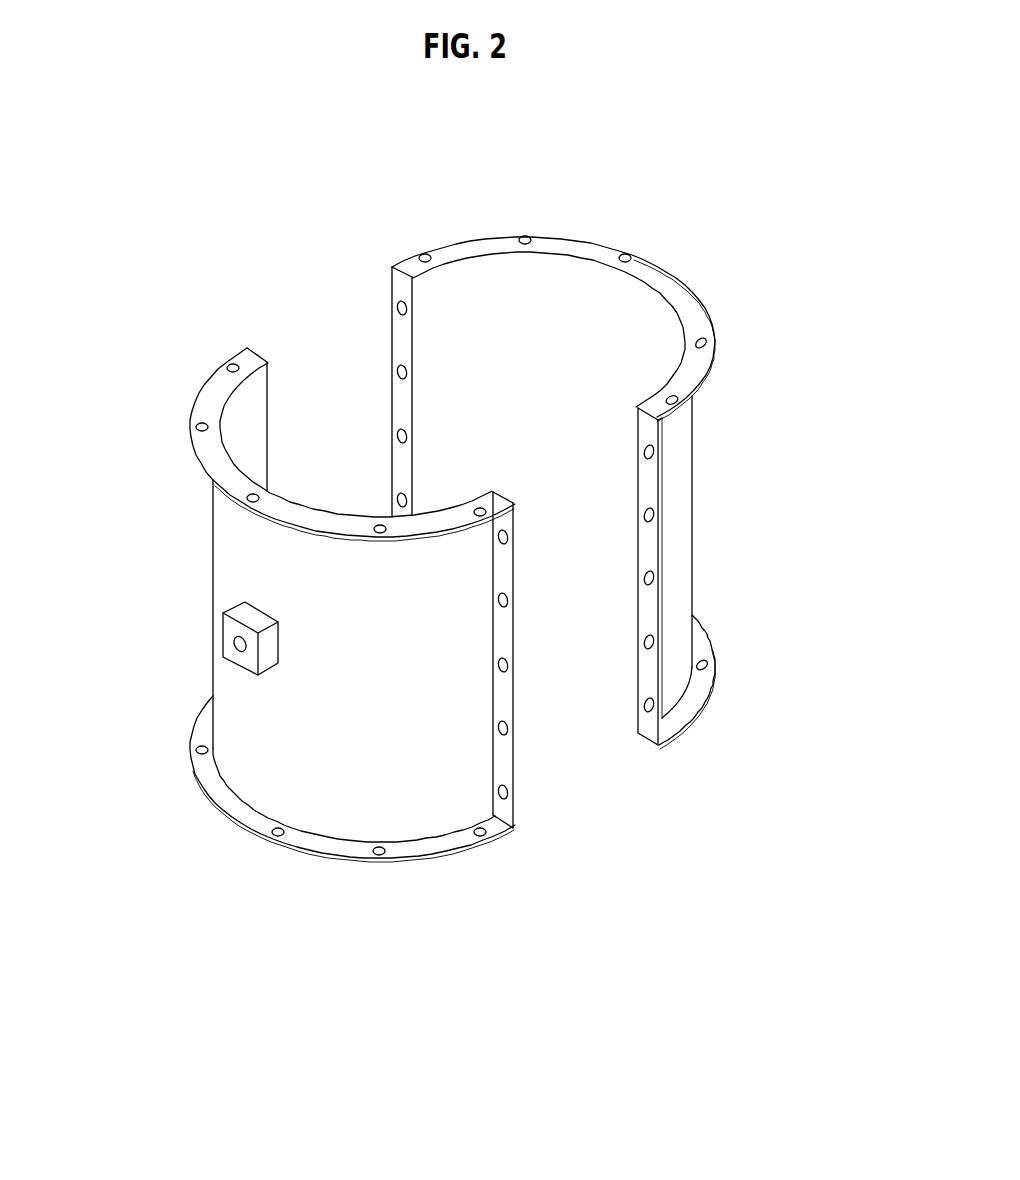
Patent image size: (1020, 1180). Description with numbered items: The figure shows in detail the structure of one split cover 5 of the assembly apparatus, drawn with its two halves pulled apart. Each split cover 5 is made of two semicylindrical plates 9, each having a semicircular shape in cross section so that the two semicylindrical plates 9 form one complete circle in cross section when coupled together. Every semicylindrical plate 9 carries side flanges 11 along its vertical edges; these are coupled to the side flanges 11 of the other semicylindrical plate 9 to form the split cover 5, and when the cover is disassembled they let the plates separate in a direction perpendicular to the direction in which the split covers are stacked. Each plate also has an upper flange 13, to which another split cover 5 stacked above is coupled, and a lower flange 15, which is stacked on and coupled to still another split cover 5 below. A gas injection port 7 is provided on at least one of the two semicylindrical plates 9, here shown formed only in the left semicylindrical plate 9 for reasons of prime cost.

The split cover 5 is at (610, 946).
The gas injection port 7 is at (230, 633).
The semicylindrical plate 9 is at (390, 773).
The side flange 11 is at (398, 340).
The upper flange 13 is at (206, 404).
The lower flange 15 is at (213, 790).